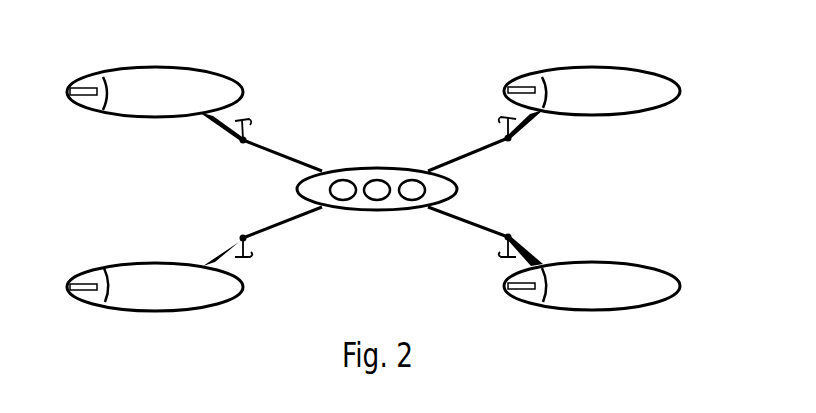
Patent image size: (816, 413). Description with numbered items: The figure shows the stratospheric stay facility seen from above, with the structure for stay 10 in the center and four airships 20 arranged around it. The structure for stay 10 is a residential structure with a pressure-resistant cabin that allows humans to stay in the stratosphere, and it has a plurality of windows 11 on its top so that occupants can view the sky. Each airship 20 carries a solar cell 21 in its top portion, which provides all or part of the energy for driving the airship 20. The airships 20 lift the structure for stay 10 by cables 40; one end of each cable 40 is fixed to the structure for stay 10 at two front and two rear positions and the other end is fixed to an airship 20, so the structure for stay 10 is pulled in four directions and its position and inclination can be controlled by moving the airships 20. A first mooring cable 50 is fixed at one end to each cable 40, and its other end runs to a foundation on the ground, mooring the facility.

The structure for stay 10 is at (391, 156).
The windows 11 is at (378, 196).
The airship 20 is at (225, 56).
The solar cell 21 is at (153, 77).
The cable 40 is at (280, 152).
The first mooring cable 50 is at (250, 122).